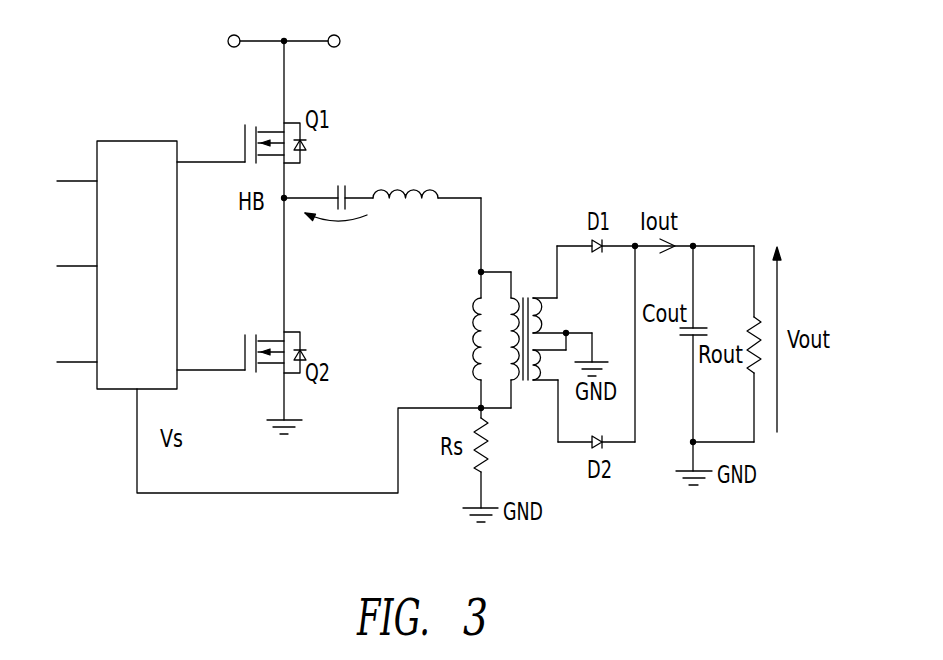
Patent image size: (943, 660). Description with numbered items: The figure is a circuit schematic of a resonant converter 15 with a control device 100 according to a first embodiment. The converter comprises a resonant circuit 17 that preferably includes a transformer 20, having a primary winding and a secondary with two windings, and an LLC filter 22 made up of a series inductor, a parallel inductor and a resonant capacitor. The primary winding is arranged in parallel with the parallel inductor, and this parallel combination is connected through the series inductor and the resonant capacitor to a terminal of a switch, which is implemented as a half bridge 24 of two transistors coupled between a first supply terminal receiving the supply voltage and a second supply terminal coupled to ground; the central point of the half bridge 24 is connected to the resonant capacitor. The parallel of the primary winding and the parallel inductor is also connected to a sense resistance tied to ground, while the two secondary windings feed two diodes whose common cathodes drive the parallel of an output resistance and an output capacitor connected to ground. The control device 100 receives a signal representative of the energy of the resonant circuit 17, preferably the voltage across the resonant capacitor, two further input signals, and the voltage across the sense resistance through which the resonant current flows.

The resonant converter 15 is at (102, 83).
The control device 100 is at (138, 141).
The resonant circuit 17 is at (400, 140).
The transformer 20 is at (530, 280).
The LLC filter 22 is at (359, 262).
The half bridge 24 is at (255, 389).